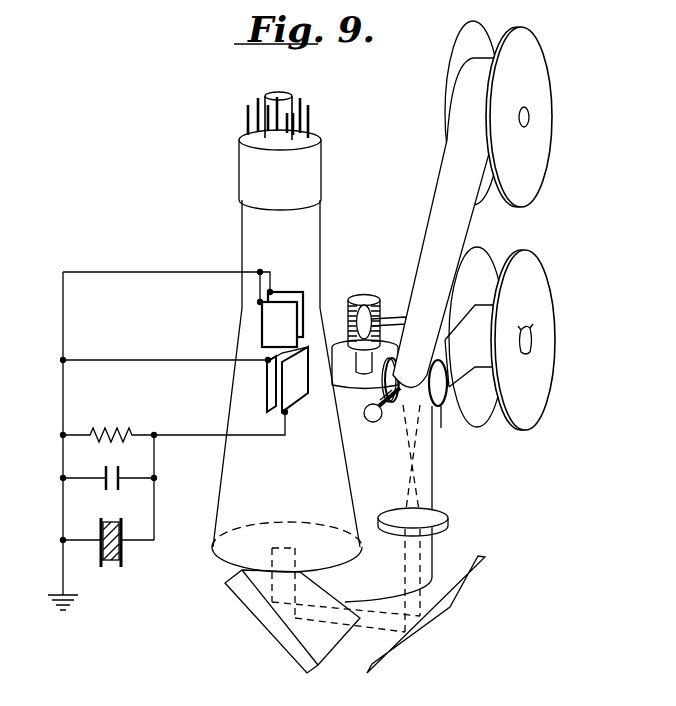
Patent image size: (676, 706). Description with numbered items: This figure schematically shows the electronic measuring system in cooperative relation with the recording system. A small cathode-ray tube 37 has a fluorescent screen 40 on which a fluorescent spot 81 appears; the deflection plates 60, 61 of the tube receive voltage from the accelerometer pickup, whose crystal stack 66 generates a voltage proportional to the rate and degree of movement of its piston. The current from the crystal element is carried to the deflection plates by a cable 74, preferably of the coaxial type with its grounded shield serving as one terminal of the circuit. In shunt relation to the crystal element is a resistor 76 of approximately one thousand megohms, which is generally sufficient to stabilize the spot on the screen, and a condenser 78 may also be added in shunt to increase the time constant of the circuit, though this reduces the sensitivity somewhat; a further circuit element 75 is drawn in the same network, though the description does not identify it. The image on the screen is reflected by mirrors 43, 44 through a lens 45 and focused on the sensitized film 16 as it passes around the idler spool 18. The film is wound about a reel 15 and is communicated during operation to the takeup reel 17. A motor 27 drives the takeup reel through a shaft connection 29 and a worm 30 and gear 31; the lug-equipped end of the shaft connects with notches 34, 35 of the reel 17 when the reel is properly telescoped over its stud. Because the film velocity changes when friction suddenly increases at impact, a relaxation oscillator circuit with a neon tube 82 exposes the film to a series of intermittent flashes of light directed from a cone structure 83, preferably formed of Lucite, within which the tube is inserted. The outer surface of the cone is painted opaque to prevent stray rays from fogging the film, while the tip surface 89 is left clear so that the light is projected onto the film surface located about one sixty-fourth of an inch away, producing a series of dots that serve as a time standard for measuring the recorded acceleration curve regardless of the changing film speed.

The reel 15 is at (484, 204).
The sensitized film 16 is at (428, 226).
The takeup reel 17 is at (507, 412).
The idler spool 18 is at (443, 408).
The motor 27 is at (388, 586).
The shaft connection 29 is at (393, 318).
The worm 30 is at (376, 302).
The gear 31 is at (339, 316).
The notch 34 is at (528, 354).
The notch 35 is at (529, 330).
The cathode-ray tube 37 is at (355, 492).
The fluorescent screen 40 is at (222, 558).
The mirror 43 is at (316, 655).
The mirror 44 is at (388, 660).
The lens 45 is at (447, 522).
The deflection plate 60 is at (303, 396).
The deflection plate 61 is at (268, 398).
The crystal stack 66 is at (113, 567).
The cable 74 is at (154, 505).
The resistor 75 is at (108, 535).
The resistor 76 is at (130, 433).
The condenser 78 is at (117, 476).
The fluorescent spot 81 is at (290, 550).
The neon tube 82 is at (389, 418).
The cone structure 83 is at (368, 421).
The tip surface 89 is at (398, 378).